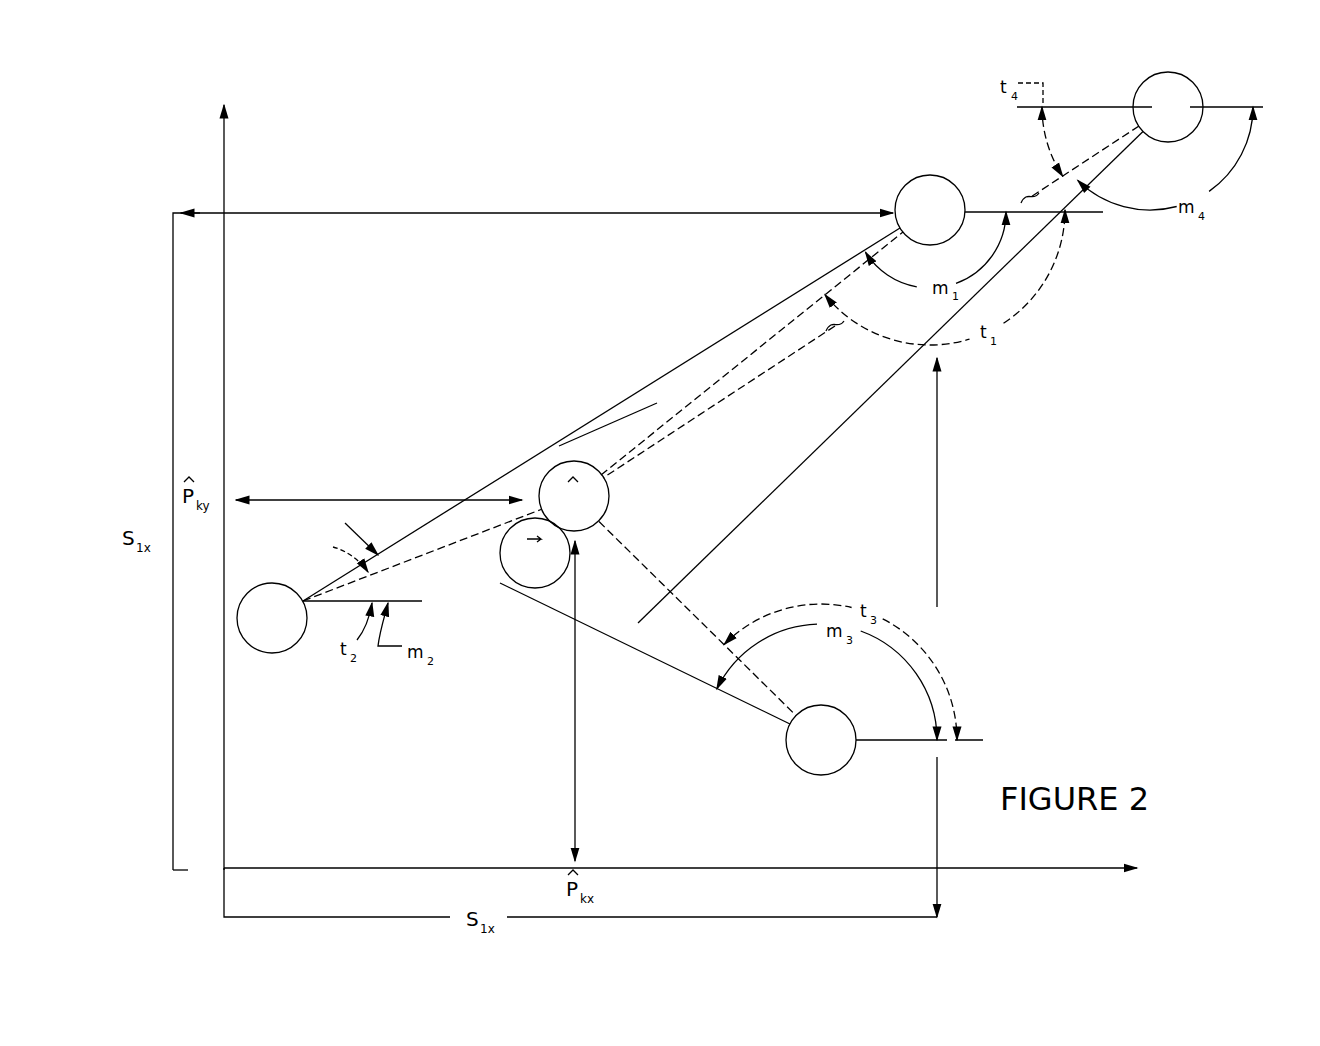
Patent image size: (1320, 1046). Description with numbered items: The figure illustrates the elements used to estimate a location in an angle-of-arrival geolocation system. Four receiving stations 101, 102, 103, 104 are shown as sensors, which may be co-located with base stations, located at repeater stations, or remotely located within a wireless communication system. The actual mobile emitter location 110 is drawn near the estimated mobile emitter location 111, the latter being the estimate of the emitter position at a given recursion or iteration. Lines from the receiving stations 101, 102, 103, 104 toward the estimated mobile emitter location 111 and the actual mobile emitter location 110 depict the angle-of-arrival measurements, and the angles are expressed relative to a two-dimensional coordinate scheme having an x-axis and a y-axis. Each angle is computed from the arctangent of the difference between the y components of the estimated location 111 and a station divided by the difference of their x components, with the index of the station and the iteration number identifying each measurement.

The receiving station 101 is at (930, 175).
The receiving station 102 is at (272, 583).
The receiving station 103 is at (846, 715).
The receiving station 104 is at (1175, 141).
The actual mobile emitter location 110 is at (502, 565).
The estimated mobile emitter location 111 is at (603, 473).